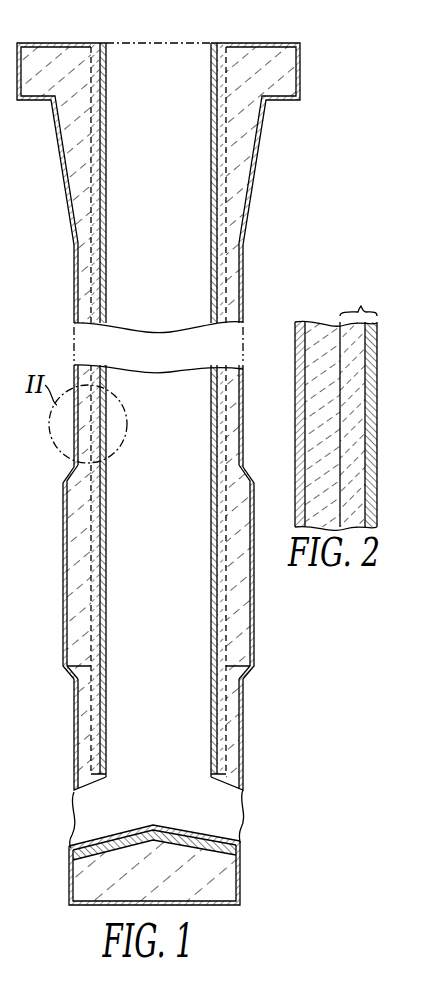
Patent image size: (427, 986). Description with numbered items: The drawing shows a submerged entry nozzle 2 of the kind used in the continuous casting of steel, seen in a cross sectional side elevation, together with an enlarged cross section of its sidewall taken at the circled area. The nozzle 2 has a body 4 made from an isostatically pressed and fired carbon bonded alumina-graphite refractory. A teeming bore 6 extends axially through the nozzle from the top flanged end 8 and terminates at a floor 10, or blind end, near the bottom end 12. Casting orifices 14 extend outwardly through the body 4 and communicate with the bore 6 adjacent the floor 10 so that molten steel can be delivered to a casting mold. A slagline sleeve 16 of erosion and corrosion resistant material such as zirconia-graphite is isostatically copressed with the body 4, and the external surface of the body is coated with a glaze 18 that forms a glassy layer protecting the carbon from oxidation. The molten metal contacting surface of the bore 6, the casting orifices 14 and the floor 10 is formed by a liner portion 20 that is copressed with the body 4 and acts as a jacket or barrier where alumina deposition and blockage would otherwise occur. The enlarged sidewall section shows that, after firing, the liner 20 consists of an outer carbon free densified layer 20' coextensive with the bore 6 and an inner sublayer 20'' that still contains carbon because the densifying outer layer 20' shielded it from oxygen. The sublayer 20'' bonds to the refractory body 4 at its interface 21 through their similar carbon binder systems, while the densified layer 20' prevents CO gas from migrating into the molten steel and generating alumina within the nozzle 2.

In FIG. 1, the submerged entry nozzle 2 is at (319, 95).
In FIG. 2, the submerged entry nozzle 2 is at (310, 305).
In FIG. 1, the body 4 is at (248, 201).
In FIG. 2, the body 4 is at (316, 416).
In FIG. 1, the bore 6 is at (132, 185).
In FIG. 2, the bore 6 is at (367, 350).
In FIG. 1, the top flanged end 8 is at (53, 56).
In FIG. 1, the floor 10 is at (145, 832).
In FIG. 1, the bottom end 12 is at (76, 882).
In FIG. 1, the casting orifices 14 is at (243, 800).
In FIG. 1, the slagline sleeve 16 is at (75, 597).
In FIG. 1, the glaze 18 is at (278, 42).
In FIG. 2, the glaze 18 is at (296, 364).
In FIG. 1, the liner portion 20 is at (165, 451).
In FIG. 2, the liner portion 20 is at (371, 399).
In FIG. 1, the outer carbon free densified layer 20' is at (158, 408).
In FIG. 2, the outer carbon free densified layer 20' is at (393, 424).
In FIG. 1, the inner sublayer 20'' is at (158, 408).
In FIG. 2, the inner sublayer 20'' is at (381, 424).
In FIG. 2, the interface 21 is at (353, 414).